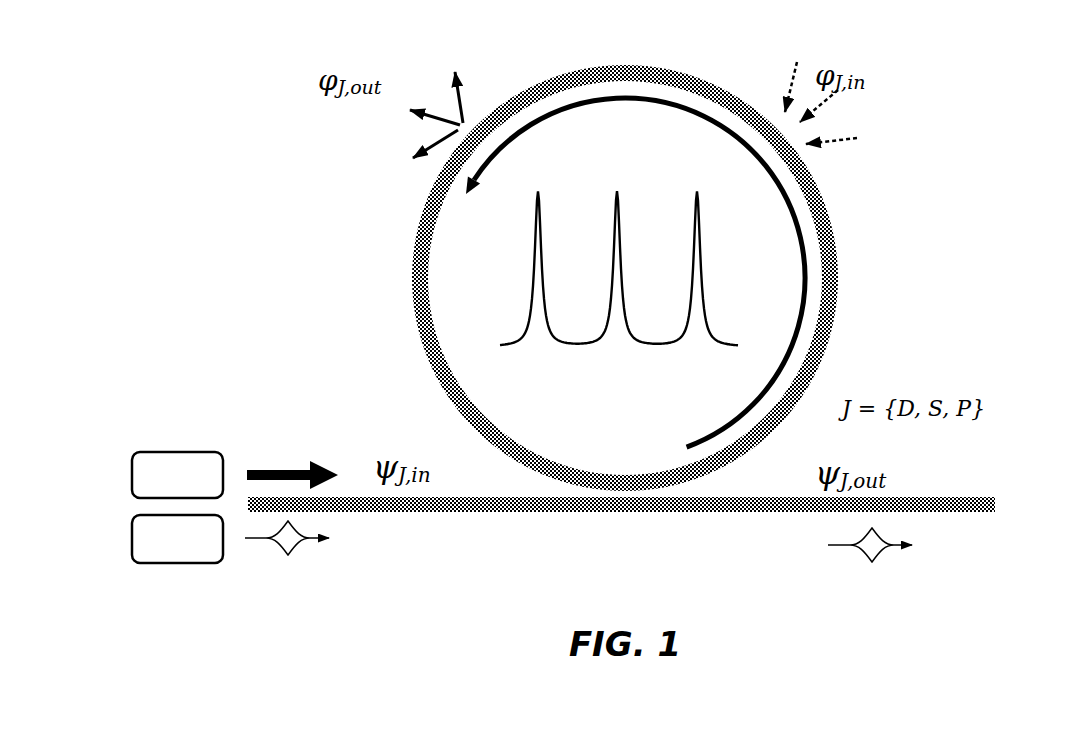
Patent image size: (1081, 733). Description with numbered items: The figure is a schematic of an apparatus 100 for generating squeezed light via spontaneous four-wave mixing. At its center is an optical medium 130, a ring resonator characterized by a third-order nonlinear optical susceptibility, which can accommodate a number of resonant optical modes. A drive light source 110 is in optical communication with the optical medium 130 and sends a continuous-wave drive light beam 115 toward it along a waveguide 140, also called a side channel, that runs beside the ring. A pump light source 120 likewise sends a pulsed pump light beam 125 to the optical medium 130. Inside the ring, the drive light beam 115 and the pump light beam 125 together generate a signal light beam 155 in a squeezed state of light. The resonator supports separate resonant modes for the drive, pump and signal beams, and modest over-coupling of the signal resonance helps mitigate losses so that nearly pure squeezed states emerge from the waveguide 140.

The apparatus 100 is at (112, 189).
The drive light source 110 is at (177, 475).
The drive light beam 115 is at (285, 449).
The pump light source 120 is at (177, 539).
The pump light beam 125 is at (330, 558).
The optical medium 130 is at (835, 305).
The waveguide 140 is at (513, 513).
The signal light beam 155 is at (891, 555).